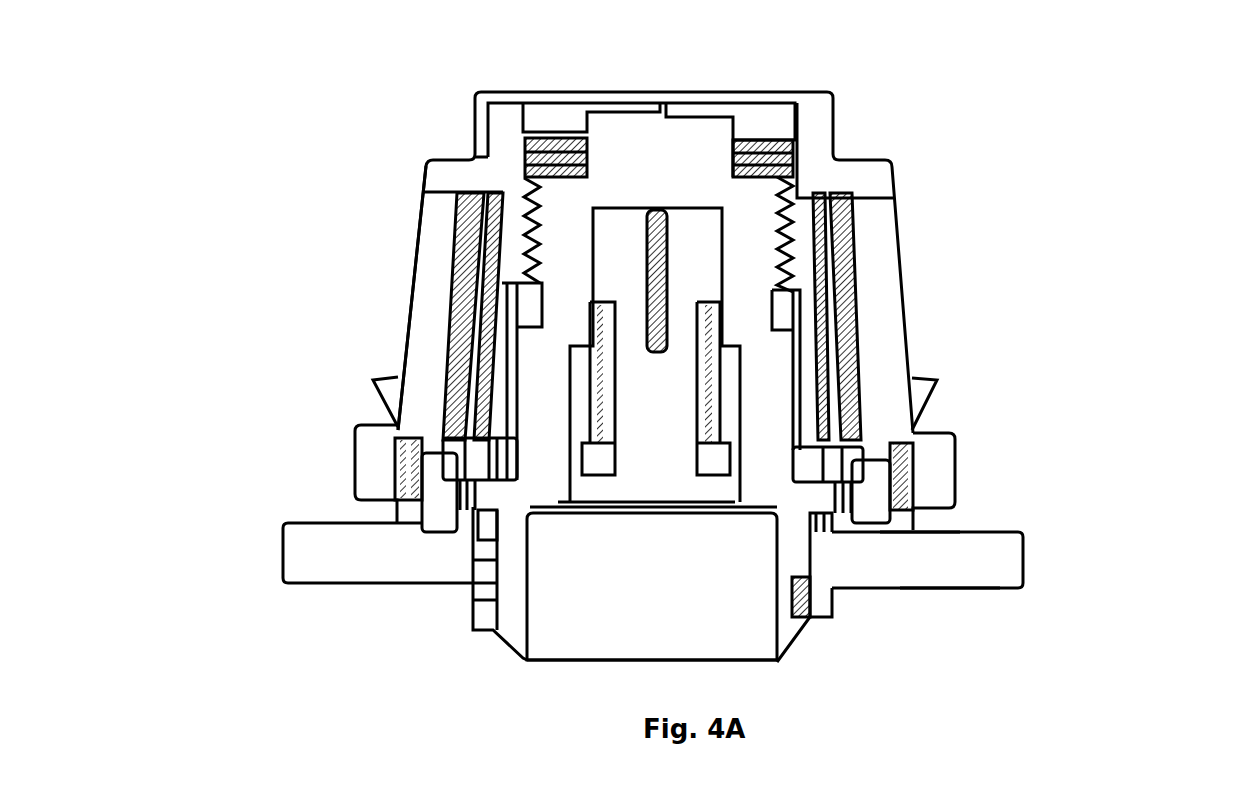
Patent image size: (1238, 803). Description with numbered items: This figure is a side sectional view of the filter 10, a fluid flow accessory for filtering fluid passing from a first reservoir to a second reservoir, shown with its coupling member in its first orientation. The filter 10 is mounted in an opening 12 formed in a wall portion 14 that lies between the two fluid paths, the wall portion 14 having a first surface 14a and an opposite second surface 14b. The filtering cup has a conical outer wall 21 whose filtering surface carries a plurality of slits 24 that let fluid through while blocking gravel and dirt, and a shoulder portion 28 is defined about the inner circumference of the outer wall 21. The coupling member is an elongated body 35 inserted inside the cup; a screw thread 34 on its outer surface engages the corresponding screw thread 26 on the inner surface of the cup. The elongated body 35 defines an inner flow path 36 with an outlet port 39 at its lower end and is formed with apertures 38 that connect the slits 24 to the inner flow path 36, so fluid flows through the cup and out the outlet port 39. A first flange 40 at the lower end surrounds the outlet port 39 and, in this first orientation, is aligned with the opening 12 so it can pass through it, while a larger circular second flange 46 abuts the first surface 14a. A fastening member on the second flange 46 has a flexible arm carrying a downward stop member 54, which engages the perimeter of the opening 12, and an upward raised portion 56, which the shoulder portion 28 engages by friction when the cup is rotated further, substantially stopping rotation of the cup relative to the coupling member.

The filter 10 is at (220, 304).
The opening 12 is at (467, 582).
The wall portion 14 is at (1003, 558).
The first surface 14a is at (993, 532).
The second surface 14b is at (993, 590).
The outer wall 21 is at (902, 276).
The slits 24 is at (452, 342).
The screw thread 26 is at (758, 150).
The shoulder portion 28 is at (395, 460).
The screw thread 34 is at (793, 230).
The elongated body 35 is at (917, 406).
The inner flow path 36 is at (632, 592).
The apertures 38 is at (607, 390).
The outlet port 39 is at (768, 662).
The first flange 40 is at (472, 585).
The second flange 46 is at (492, 493).
The stop member 54 is at (862, 530).
The raised portion 56 is at (882, 478).